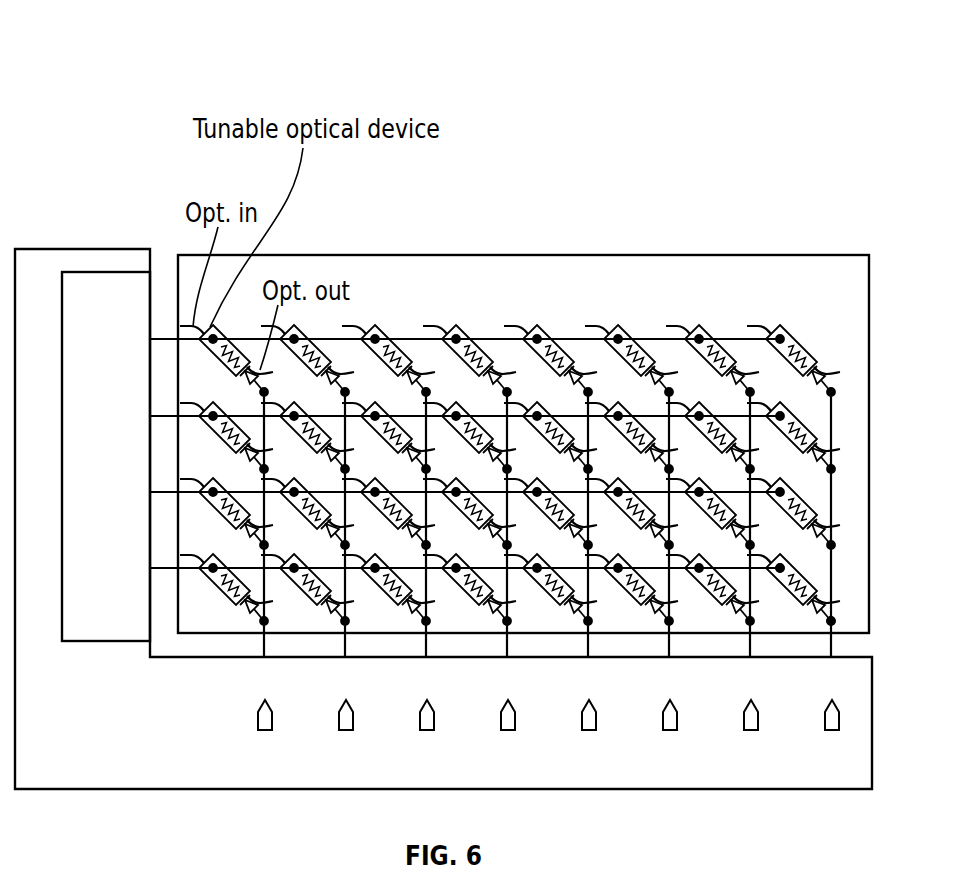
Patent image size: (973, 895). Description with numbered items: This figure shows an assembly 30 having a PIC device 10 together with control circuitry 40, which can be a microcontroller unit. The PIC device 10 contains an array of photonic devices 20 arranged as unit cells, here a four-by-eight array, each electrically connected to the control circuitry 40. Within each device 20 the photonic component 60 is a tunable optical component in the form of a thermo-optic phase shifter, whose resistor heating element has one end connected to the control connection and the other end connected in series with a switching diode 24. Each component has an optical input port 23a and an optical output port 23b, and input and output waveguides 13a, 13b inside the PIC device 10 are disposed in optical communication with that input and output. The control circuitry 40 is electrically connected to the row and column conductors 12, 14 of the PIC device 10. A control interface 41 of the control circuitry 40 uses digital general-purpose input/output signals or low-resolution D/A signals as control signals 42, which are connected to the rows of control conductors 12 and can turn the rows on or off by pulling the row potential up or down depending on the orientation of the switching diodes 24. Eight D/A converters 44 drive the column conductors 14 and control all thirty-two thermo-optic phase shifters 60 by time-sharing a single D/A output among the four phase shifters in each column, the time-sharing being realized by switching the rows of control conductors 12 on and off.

The assembly 30 is at (127, 43).
The control circuitry 40 is at (83, 249).
The control interface 41 is at (62, 348).
The control signals 42 is at (424, 471).
The D/A converters 44 is at (548, 583).
The PIC device 10 is at (717, 254).
The control conductors 12 is at (417, 338).
The input waveguide 13a is at (522, 332).
The output waveguide 13b is at (583, 370).
The tunable optical component 60 is at (640, 331).
The switching diode 24 is at (740, 370).
The photonic device 20 is at (811, 332).
The conductors 14 is at (831, 500).
The input port 23a is at (784, 568).
The output port 23b is at (835, 622).